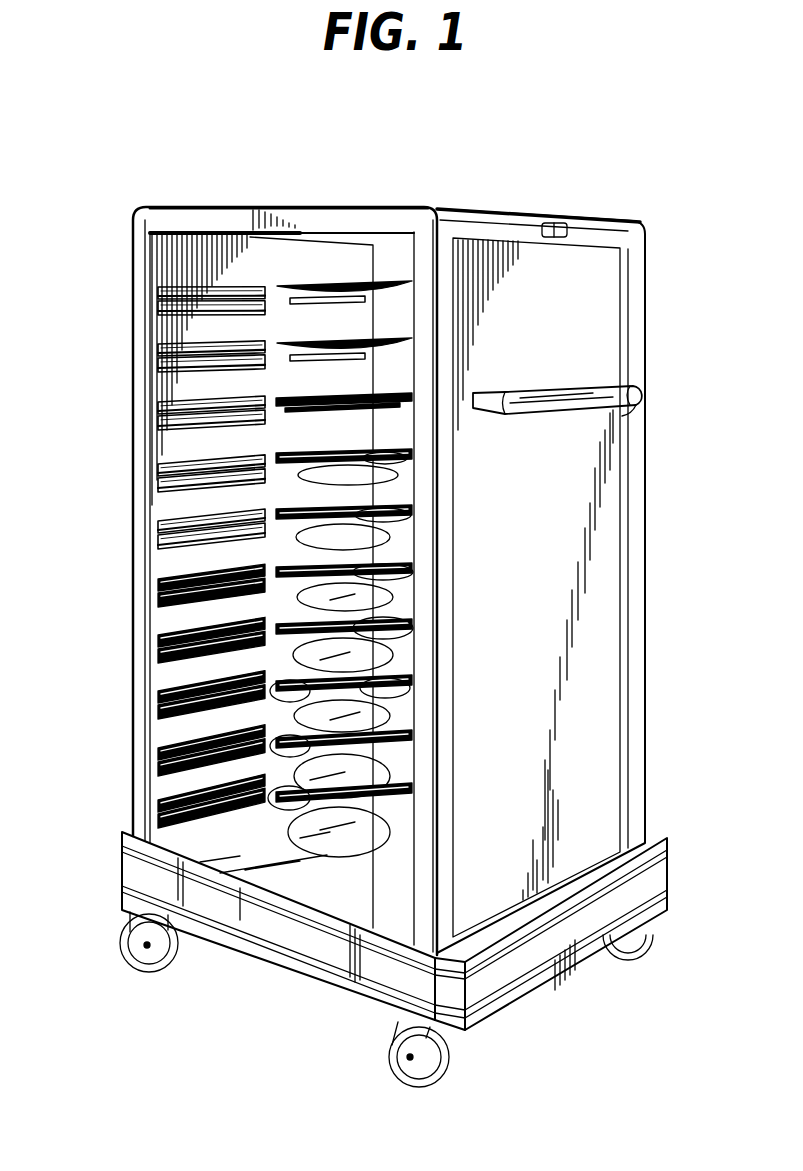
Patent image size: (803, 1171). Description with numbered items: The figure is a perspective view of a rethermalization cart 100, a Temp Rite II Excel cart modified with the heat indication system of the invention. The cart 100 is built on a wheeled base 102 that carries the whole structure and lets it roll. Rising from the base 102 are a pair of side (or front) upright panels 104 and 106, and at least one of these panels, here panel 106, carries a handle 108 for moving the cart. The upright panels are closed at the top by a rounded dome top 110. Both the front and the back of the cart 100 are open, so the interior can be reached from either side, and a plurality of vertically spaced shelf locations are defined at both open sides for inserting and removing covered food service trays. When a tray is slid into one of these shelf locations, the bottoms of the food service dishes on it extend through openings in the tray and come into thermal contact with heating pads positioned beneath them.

The rethermalization cart 100 is at (558, 142).
The wheeled base 102 is at (290, 955).
The side upright panel 104 is at (133, 535).
The side upright panel 106 is at (613, 582).
The handle 108 is at (642, 407).
The rounded dome top 110 is at (630, 221).